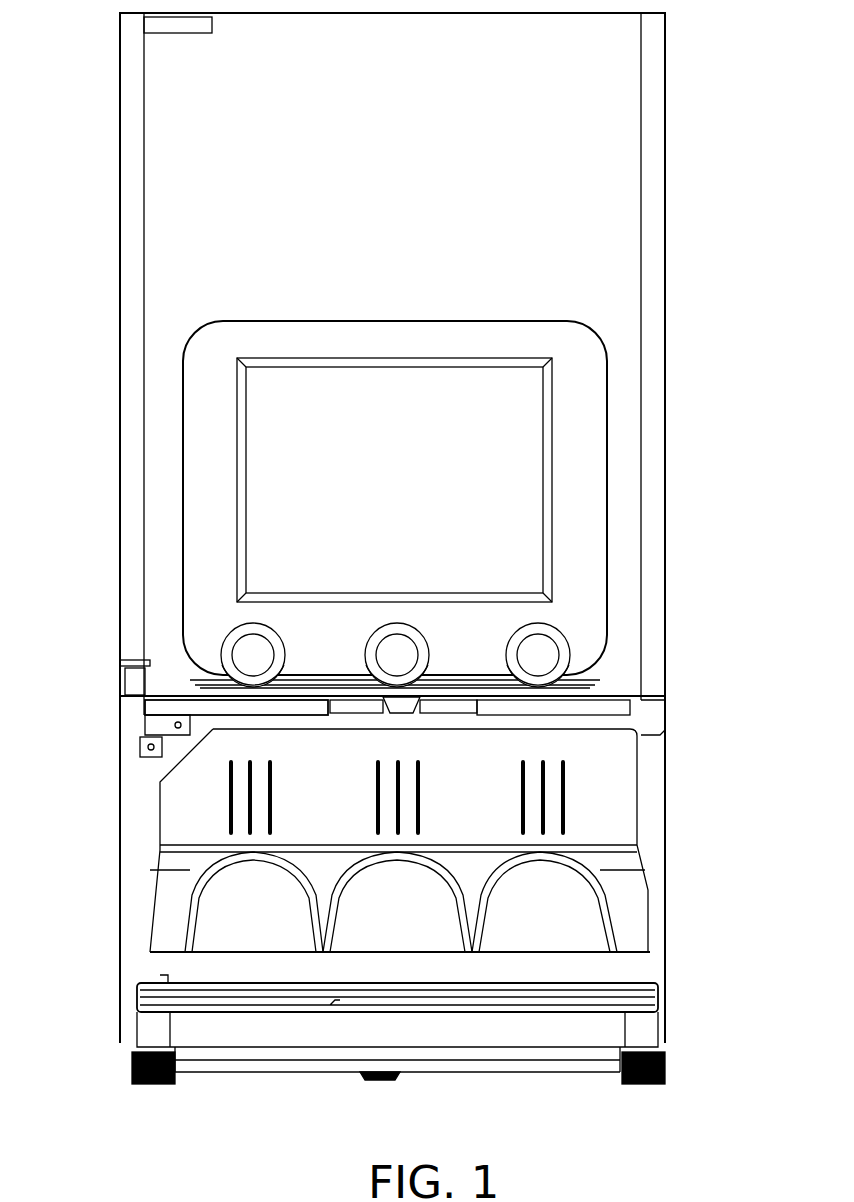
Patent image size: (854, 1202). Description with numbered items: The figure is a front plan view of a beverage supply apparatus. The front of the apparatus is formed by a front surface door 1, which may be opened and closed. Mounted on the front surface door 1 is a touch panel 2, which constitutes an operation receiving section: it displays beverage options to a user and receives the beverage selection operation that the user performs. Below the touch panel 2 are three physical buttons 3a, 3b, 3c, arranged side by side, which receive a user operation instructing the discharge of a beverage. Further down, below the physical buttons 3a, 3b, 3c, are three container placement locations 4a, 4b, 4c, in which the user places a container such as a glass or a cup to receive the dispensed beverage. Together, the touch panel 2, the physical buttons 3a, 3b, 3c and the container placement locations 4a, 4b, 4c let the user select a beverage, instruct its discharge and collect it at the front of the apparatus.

The front surface door 1 is at (660, 140).
The touch panel 2 is at (523, 468).
The physical button 3a is at (222, 652).
The physical button 3b is at (397, 623).
The physical button 3c is at (565, 650).
The container placement location 4a is at (228, 903).
The container placement location 4b is at (365, 940).
The container placement location 4c is at (568, 890).